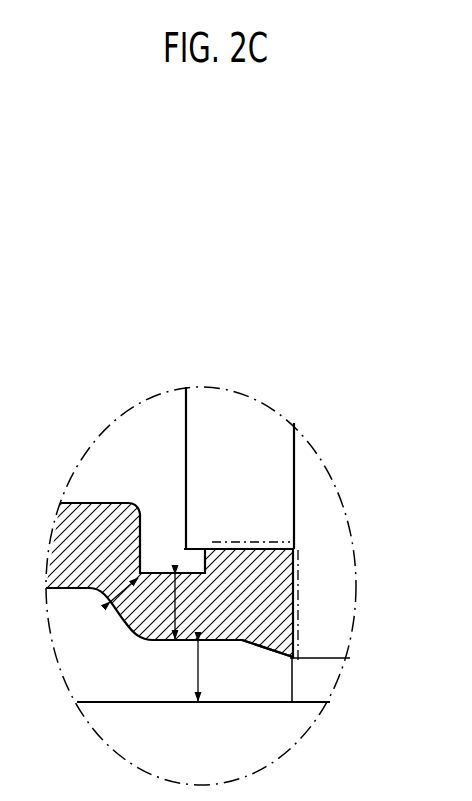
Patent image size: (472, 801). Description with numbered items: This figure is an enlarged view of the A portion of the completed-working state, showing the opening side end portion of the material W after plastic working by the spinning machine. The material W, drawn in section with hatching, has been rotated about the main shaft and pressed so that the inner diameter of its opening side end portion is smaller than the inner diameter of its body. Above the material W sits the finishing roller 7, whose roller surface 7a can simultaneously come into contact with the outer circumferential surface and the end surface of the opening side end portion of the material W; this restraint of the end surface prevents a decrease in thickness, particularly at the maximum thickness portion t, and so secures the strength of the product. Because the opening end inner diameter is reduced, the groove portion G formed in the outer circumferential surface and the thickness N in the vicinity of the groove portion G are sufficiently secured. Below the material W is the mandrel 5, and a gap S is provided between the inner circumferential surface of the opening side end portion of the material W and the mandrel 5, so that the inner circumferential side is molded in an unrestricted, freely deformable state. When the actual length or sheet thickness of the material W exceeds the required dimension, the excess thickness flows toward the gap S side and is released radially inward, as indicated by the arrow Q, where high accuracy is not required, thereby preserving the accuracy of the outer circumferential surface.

The mandrel 5 is at (98, 702).
The finishing roller 7 is at (185, 417).
The roller surface 7a is at (231, 541).
The material W is at (99, 503).
The thickness N is at (173, 609).
The groove portion G is at (175, 574).
The gap S is at (197, 672).
The maximum thickness portion t is at (124, 592).
The arrow Q is at (280, 657).
The A portion A is at (318, 452).